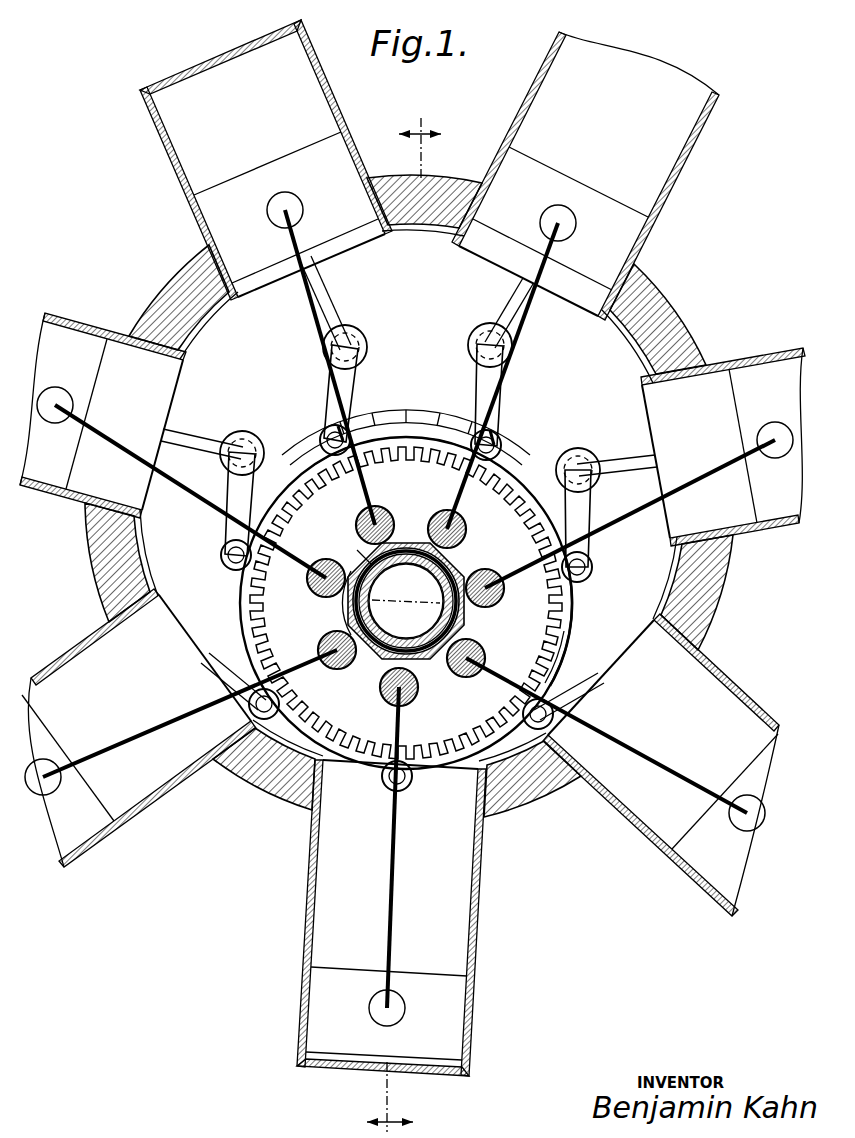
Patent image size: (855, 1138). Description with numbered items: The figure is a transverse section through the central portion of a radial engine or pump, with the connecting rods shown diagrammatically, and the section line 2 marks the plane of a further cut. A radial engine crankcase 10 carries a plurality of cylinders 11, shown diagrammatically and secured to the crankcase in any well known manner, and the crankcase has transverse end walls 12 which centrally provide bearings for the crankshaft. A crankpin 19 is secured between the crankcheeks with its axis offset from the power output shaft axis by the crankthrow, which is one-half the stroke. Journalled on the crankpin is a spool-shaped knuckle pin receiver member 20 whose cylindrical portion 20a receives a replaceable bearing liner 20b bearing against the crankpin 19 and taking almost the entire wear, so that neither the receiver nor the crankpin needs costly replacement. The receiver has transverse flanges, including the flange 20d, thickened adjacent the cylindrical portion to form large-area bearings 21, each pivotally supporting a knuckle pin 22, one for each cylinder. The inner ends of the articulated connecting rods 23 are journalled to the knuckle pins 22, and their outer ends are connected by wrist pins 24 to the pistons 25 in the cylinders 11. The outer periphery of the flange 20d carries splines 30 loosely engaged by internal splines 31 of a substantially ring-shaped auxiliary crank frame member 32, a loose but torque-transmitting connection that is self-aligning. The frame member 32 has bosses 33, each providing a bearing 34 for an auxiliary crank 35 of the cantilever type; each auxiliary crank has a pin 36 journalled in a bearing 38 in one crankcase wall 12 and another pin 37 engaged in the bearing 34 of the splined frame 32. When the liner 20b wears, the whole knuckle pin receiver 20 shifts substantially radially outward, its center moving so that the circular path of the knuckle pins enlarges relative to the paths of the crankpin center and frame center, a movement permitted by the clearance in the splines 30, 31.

The section line 2- 2 is at (404, 627).
The radial engine crankcase 10 is at (730, 590).
The cylinders 11 is at (652, 257).
The transverse end walls 12 is at (408, 495).
The crankpin 19 is at (407, 538).
The knuckle pin receiver member 20 is at (252, 602).
The cylindrical portion 20a is at (345, 617).
The bearing liner 20b is at (357, 550).
The flange 20d is at (567, 640).
The knuckle pin bearings 21 is at (486, 568).
The knuckle pin 22 is at (466, 524).
The articulated connecting rods 23 is at (522, 331).
The wrist pins 24 is at (296, 196).
The pistons 25 is at (250, 179).
The splines 30 is at (573, 612).
The splines 31 is at (524, 486).
The auxiliary crank frame member 32 is at (524, 458).
The bosses 33 is at (322, 432).
The bearing 34 is at (320, 443).
The auxiliary cranks 35 is at (503, 409).
The pins 36 is at (468, 349).
The pins 37 is at (498, 446).
The bearings 38 is at (492, 324).